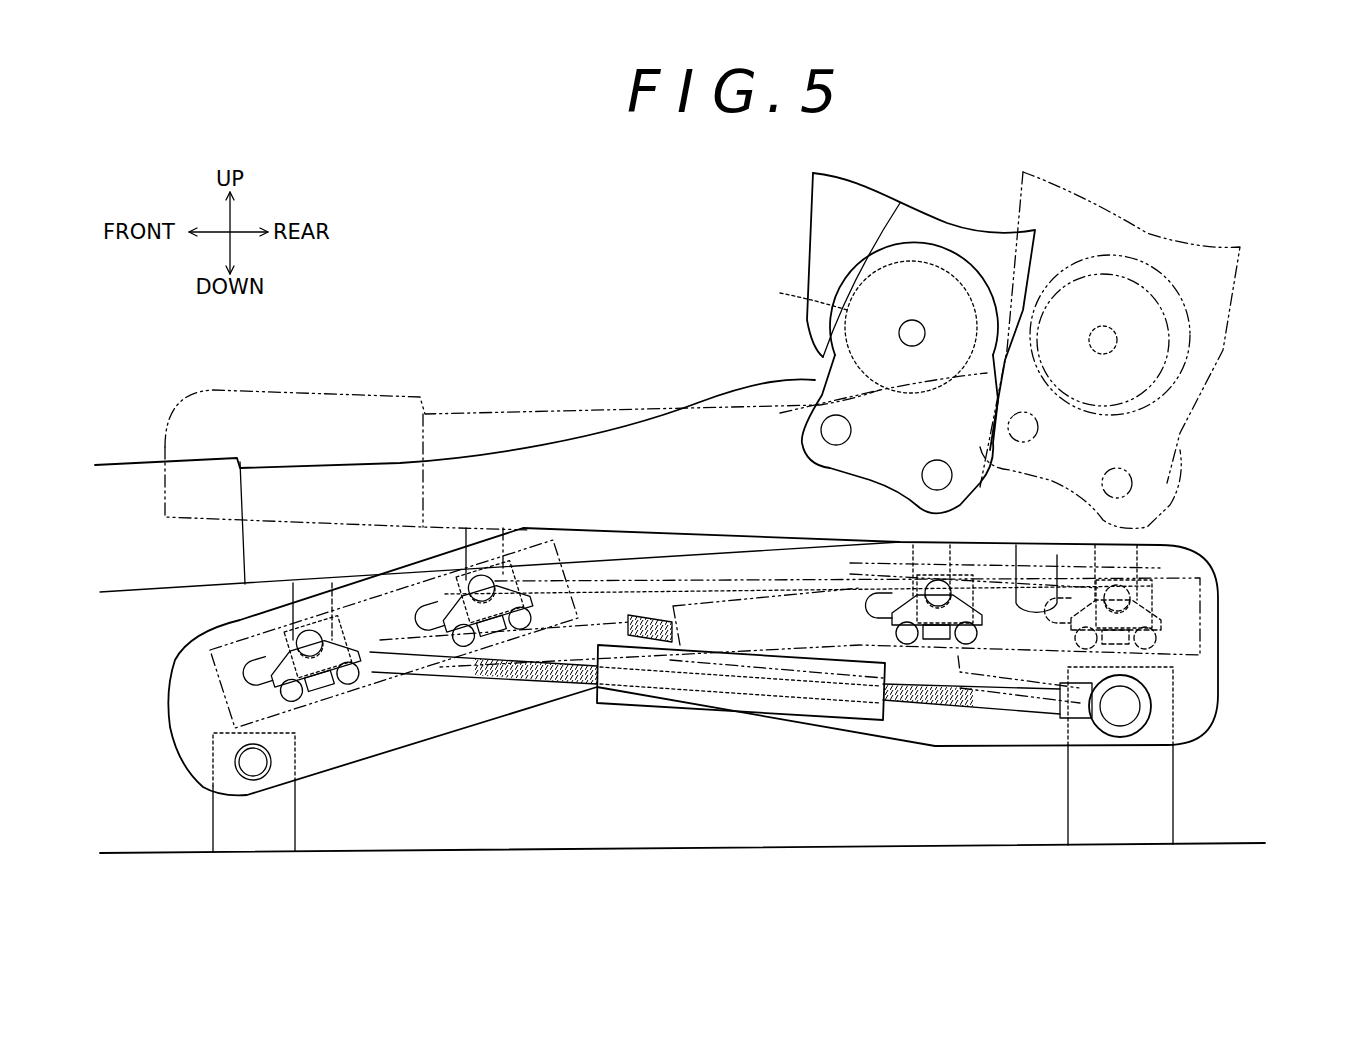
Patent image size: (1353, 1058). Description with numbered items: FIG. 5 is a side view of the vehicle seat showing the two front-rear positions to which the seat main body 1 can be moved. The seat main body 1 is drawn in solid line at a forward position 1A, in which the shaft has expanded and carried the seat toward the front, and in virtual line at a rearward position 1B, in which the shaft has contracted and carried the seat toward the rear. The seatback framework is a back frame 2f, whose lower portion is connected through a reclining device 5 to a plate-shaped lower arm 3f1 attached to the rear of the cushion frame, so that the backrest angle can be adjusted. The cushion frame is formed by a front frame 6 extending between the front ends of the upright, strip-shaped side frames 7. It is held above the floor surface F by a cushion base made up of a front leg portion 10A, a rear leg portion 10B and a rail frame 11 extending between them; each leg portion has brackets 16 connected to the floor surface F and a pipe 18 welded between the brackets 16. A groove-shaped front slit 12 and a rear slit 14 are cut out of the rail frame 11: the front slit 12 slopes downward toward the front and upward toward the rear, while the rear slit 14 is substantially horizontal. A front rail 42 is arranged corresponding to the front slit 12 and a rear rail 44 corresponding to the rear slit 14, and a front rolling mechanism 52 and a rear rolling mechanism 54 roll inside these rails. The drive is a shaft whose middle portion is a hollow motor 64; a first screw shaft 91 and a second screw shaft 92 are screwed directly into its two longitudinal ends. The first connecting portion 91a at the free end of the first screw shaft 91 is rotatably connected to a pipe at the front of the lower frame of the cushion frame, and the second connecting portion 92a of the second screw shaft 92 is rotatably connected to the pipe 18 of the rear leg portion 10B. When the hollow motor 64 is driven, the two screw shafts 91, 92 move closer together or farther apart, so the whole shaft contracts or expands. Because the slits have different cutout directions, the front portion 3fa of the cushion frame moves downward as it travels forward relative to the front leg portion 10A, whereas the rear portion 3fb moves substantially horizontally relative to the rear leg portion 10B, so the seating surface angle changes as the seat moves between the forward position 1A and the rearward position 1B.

The seat main body 1 is at (570, 232).
The forward position 1A is at (113, 462).
The rearward position 1B is at (283, 390).
The back frame 2f is at (1023, 193).
The front portion 3fa is at (178, 425).
The rear portion 3fb is at (997, 480).
The lower arm 3f1 is at (957, 420).
The reclining device 5 is at (780, 293).
The front frame 6 is at (365, 396).
The side frame 7 is at (513, 453).
The front leg portion 10A is at (283, 823).
The rear leg portion 10B is at (1163, 807).
The rail frame 11 is at (190, 675).
The front slit 12 is at (403, 650).
The rear slit 14 is at (1016, 545).
The bracket 16 is at (227, 817).
The pipe 18 is at (237, 758).
The front rail 42 is at (255, 633).
The rear rail 44 is at (1160, 575).
The front rolling mechanism 52 is at (346, 656).
The rear rolling mechanism 54 is at (910, 613).
The hollow motor 64 is at (700, 670).
The first screw shaft 91 is at (573, 687).
The first connecting portion 91a is at (512, 662).
The second screw shaft 92 is at (1005, 687).
The second connecting portion 92a is at (1150, 706).
The floor surface F is at (770, 847).